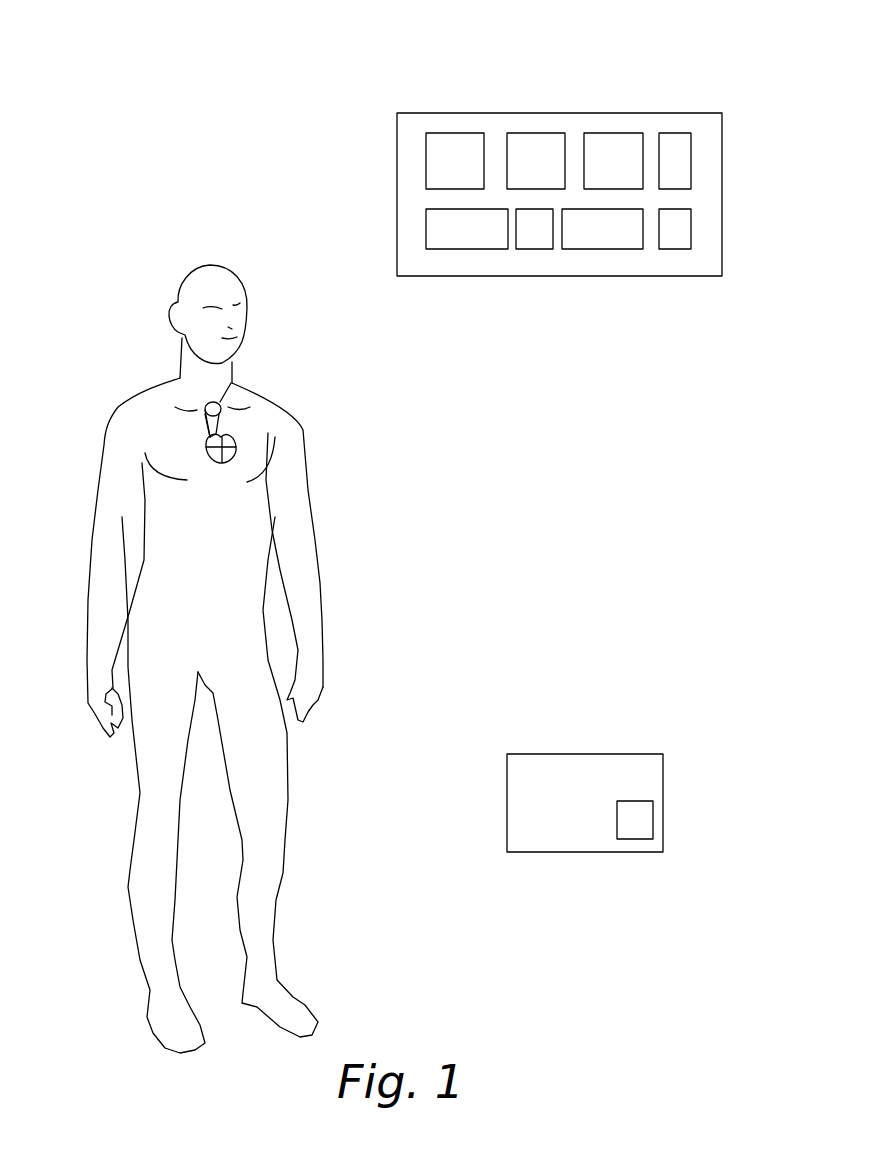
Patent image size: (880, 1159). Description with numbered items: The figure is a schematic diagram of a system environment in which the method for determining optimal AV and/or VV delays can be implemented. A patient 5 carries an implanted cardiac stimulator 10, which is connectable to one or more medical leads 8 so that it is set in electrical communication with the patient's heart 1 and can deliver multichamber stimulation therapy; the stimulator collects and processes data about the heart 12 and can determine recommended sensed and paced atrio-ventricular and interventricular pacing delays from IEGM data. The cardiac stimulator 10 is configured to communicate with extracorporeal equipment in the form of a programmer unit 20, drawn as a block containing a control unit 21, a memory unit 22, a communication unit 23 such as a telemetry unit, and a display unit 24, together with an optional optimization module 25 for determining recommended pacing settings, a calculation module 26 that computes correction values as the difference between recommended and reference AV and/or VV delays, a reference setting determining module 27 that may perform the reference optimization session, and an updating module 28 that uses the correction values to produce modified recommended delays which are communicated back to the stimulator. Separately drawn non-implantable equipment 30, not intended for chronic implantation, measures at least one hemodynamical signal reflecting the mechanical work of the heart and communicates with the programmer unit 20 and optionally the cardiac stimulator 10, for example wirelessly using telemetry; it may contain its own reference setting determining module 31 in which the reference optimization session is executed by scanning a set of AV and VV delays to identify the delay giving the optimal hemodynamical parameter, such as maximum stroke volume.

The heart 1 is at (210, 470).
The patient 5 is at (118, 376).
The medical leads 8 is at (210, 423).
The cardiac stimulator 10 is at (220, 402).
The heart 12 is at (235, 448).
The programmer unit 20 is at (723, 106).
The control unit 21 is at (460, 133).
The memory unit 22 is at (538, 133).
The communication unit 23 is at (614, 133).
The display unit 24 is at (468, 249).
The optimization module 25 is at (612, 249).
The calculation module 26 is at (532, 249).
The reference setting determining module 27 is at (680, 133).
The updating module 28 is at (673, 249).
The non-implantable equipment 30 is at (623, 852).
The reference setting determining module 31 is at (653, 818).